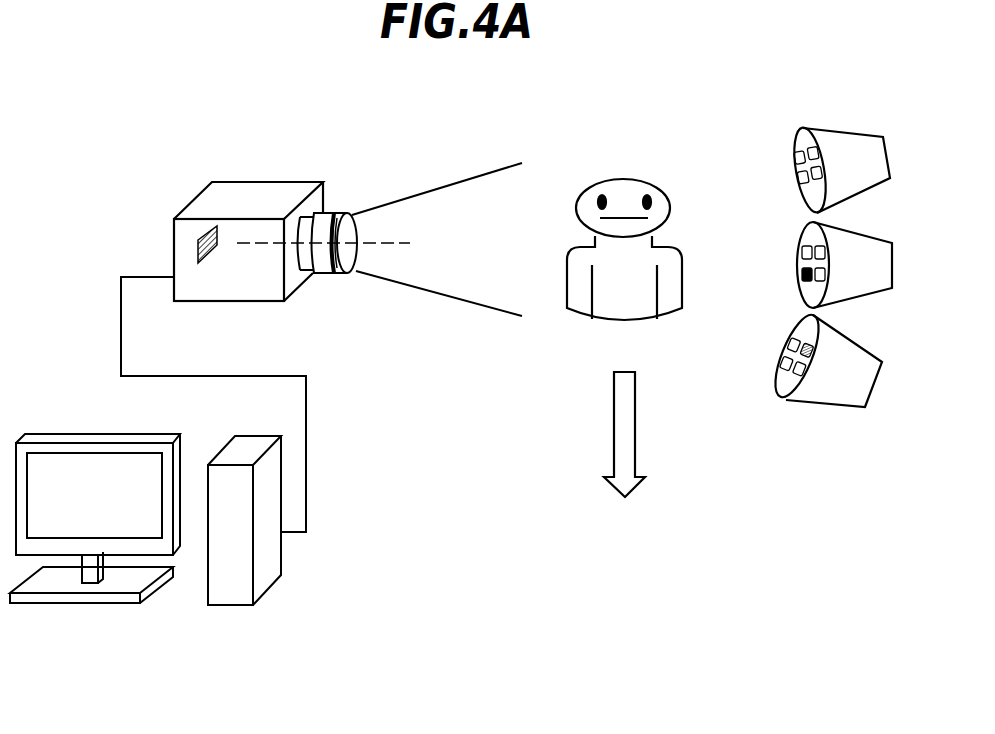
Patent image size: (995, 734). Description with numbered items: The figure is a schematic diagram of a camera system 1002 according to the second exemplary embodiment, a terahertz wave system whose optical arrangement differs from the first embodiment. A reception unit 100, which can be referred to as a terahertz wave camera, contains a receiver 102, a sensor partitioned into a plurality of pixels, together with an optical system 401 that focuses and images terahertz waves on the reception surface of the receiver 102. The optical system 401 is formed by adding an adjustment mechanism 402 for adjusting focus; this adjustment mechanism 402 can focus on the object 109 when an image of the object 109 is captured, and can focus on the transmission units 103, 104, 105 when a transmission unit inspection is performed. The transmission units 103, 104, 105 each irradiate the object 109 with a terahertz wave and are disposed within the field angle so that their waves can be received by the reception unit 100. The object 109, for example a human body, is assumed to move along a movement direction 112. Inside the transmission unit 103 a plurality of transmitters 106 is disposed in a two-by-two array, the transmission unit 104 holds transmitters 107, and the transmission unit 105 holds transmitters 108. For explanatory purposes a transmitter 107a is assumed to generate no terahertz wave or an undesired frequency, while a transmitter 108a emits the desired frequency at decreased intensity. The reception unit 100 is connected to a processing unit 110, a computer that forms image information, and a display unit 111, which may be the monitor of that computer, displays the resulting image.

The camera system 1002 is at (110, 113).
The reception unit 100 is at (253, 182).
The receiver 102 is at (210, 227).
The optical system 401 is at (328, 220).
The adjustment mechanism 402 is at (338, 275).
The object 109 is at (627, 178).
The transmission unit 103 is at (816, 139).
The transmission unit 104 is at (804, 246).
The transmission unit 105 is at (785, 386).
The transmitters 106 is at (797, 148).
The transmitters 107 is at (805, 244).
The transmitter 107a is at (800, 272).
The transmitters 108 is at (782, 392).
The transmitter 108a is at (788, 337).
The movement direction 112 is at (614, 430).
The processing unit 110 is at (265, 575).
The display unit 111 is at (153, 518).